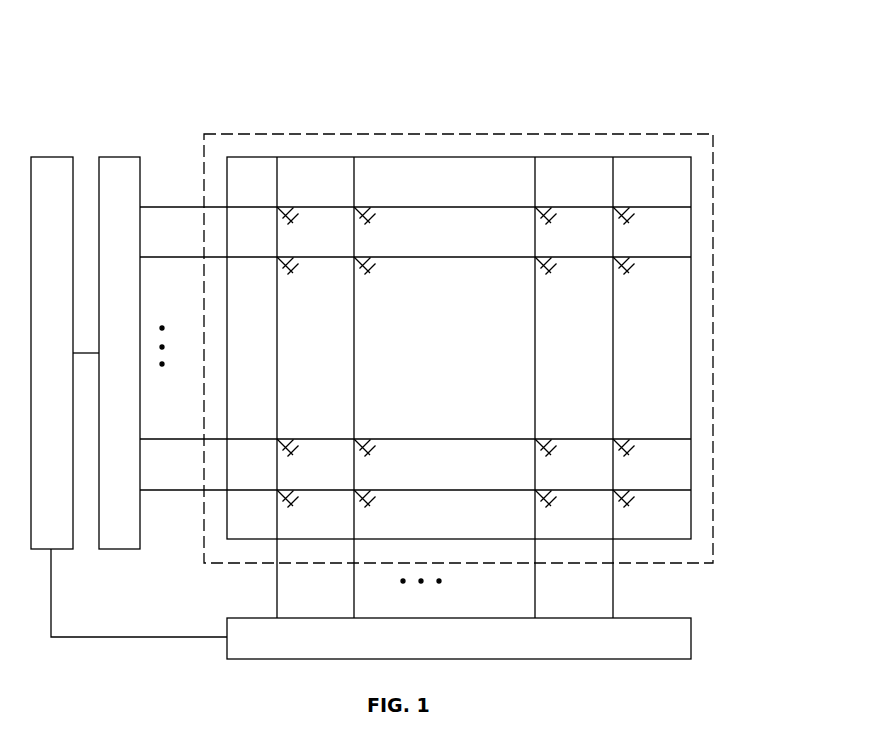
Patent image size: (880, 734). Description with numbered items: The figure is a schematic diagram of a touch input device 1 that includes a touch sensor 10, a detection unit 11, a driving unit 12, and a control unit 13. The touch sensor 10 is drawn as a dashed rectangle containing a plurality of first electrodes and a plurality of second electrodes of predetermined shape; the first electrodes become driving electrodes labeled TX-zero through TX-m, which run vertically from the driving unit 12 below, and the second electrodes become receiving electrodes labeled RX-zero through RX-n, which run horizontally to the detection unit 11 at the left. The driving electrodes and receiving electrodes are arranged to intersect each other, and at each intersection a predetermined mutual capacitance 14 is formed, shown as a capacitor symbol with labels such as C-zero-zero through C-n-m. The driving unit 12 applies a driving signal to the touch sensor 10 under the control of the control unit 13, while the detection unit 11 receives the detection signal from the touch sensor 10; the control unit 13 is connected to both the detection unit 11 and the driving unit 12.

The touch input device 1 is at (679, 80).
The touch sensor 10 is at (713, 134).
The detection unit 11 is at (120, 157).
The driving unit 12 is at (691, 638).
The control unit 13 is at (52, 157).
The mutual capacitance 14 is at (292, 207).